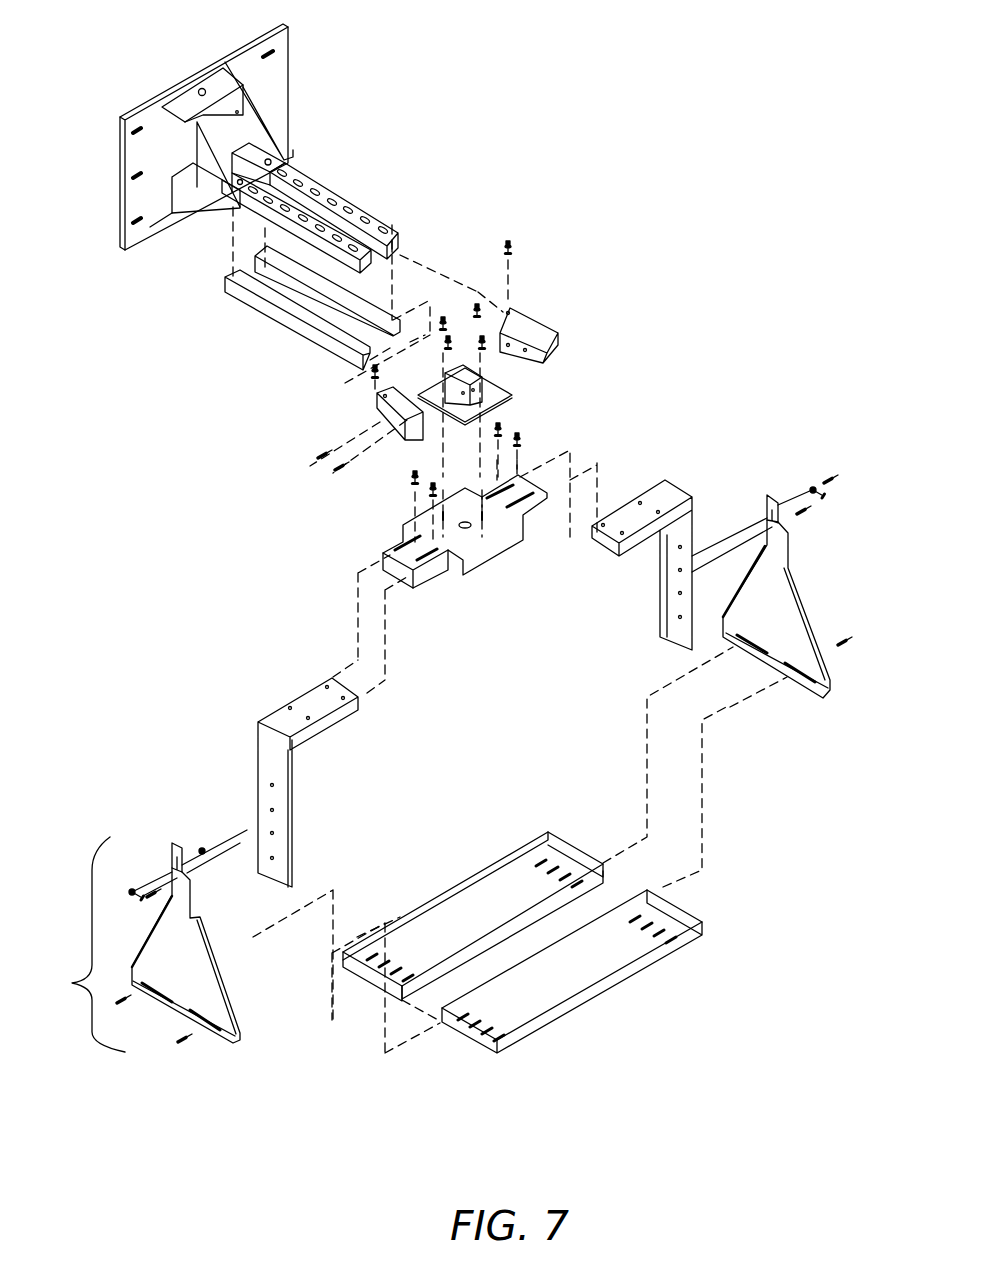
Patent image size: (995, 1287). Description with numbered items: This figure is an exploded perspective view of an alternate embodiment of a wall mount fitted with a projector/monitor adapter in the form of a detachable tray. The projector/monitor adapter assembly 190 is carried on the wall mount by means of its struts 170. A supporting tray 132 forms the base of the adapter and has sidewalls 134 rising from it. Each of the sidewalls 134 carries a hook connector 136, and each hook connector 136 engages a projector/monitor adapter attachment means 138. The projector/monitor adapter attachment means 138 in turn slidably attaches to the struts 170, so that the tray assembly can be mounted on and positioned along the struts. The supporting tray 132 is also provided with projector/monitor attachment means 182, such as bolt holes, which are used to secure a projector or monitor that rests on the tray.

The strut 170 is at (335, 193).
The projector/monitor adapter attachment means 138 is at (297, 700).
The hook connector 136 is at (172, 843).
The sidewall 134 is at (807, 605).
The projector/monitor adapter assembly 190 is at (127, 944).
The projector/monitor attachment means 182 is at (678, 940).
The supporting tray 132 is at (568, 1017).